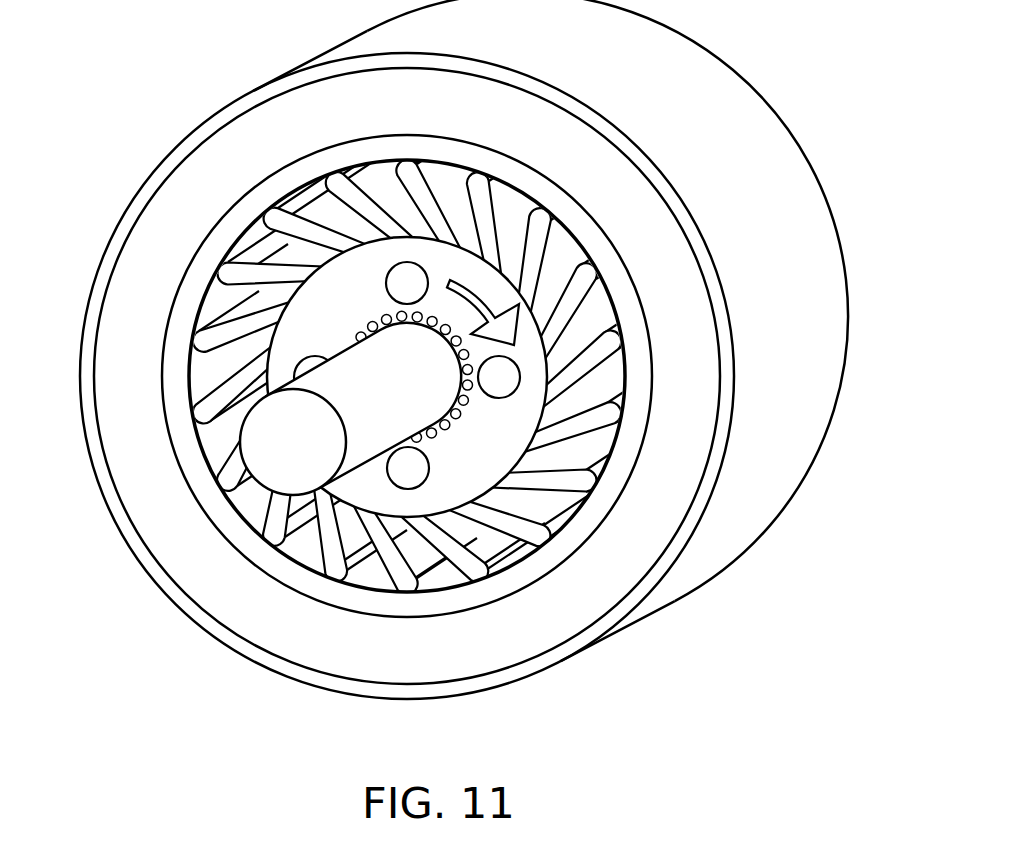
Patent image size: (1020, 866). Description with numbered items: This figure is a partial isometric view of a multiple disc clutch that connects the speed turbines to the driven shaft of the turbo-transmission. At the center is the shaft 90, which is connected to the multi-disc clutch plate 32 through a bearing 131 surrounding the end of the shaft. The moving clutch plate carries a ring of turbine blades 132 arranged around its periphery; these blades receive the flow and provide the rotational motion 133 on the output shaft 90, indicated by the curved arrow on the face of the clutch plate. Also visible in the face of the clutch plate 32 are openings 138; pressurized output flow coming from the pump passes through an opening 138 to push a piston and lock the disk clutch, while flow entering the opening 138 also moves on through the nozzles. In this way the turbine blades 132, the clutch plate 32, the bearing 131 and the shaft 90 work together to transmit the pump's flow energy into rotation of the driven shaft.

The multi-disc clutch plate 32 is at (545, 418).
The shaft 90 is at (250, 402).
The bearing 131 is at (460, 428).
The turbine blades 132 is at (245, 258).
The rotational motion 133 is at (492, 330).
The opening 138 is at (520, 380).